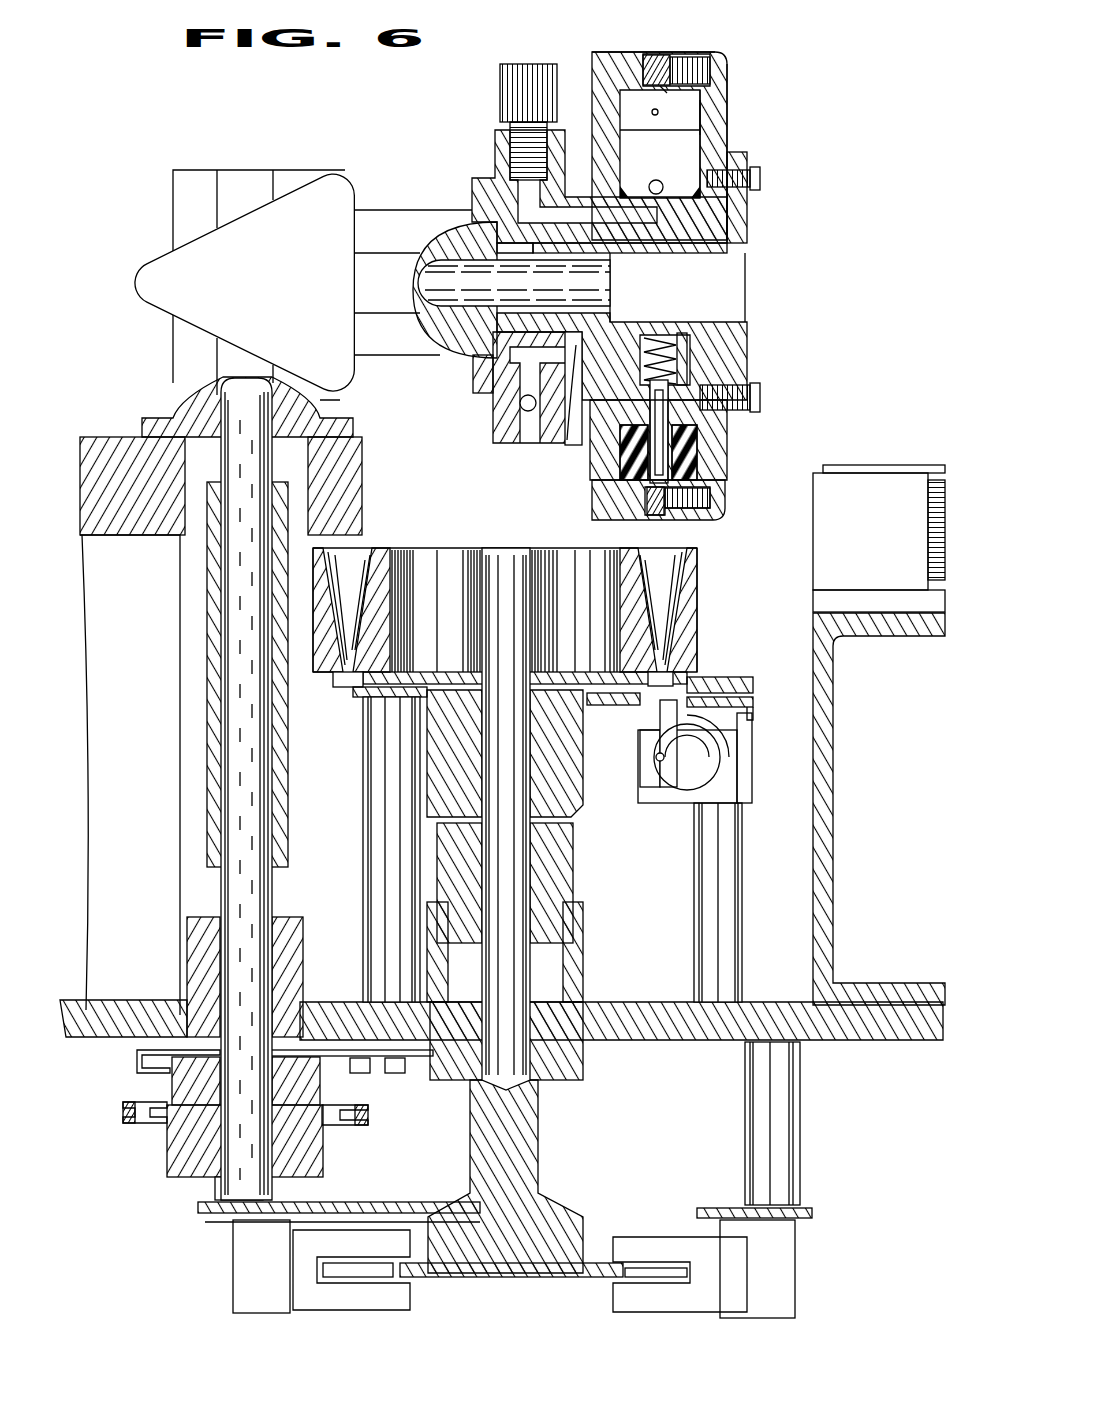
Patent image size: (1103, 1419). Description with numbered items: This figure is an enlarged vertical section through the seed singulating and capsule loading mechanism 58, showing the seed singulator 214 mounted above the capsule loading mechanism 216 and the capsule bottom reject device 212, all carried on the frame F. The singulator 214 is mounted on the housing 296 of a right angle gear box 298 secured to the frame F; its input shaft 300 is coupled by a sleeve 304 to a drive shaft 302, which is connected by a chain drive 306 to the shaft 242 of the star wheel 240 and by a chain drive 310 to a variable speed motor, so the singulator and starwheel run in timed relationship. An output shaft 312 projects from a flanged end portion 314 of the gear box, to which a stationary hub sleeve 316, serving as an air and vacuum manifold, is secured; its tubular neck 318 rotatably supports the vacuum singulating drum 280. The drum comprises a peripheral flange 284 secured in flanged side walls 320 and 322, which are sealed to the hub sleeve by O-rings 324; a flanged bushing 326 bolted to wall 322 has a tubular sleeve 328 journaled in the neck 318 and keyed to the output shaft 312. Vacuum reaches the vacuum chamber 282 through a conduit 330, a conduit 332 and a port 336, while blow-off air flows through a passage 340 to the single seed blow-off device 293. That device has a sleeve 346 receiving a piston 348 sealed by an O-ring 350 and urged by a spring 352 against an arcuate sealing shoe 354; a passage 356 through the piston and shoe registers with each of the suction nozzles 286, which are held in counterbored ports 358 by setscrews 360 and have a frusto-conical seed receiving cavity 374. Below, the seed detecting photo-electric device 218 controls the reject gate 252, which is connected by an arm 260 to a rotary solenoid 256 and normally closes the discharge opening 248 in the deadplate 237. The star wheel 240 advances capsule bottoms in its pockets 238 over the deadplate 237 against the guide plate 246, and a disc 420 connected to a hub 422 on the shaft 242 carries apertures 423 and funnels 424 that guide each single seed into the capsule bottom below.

The seed singulating and capsule loading mechanism 58 is at (813, 320).
The frame F is at (868, 1038).
The capsule bottom reject device 212 is at (640, 790).
The seed singulator 214 is at (734, 98).
The capsule loading mechanism 216 is at (700, 583).
The seed detecting photo-electric device 218 is at (876, 473).
The deadplate 237 is at (752, 710).
The pockets 238 is at (688, 673).
The star wheel 240 is at (360, 704).
The shaft 242 is at (530, 862).
The guide plate 246 is at (720, 680).
The discharge opening 248 is at (627, 705).
The reject gate 252 is at (650, 725).
The rotary solenoid 256 is at (713, 757).
The arm 260 is at (700, 713).
The vacuum singulating drum 280 is at (727, 118).
The vacuum chamber 282 is at (680, 140).
The peripheral flange 284 is at (598, 54).
The suction nozzles 286 is at (664, 64).
The single seed blow-off device 293 is at (700, 457).
The housing 296 is at (388, 208).
The right angle gear box 298 is at (173, 207).
The input shaft 300 is at (236, 408).
The drive shaft 302 is at (262, 892).
The sleeve 304 is at (213, 718).
The chain drive 306 is at (392, 1070).
The chain drive 310 is at (362, 1115).
The output shaft 312 is at (420, 285).
The flanged end portion 314 is at (478, 382).
The stationary hub sleeve 316 is at (495, 418).
The tubular neck 318 is at (722, 208).
The flanged side wall 320 is at (592, 62).
The flanged side wall 322 is at (727, 88).
The O-rings 324 is at (621, 192).
The flanged bushing 326 is at (747, 233).
The tubular sleeve 328 is at (727, 250).
The conduit 330 is at (500, 88).
The conduit 332 is at (520, 214).
The port 336 is at (641, 203).
The passage 340 is at (573, 357).
The sleeve 346 is at (678, 335).
The piston 348 is at (682, 414).
The O-ring 350 is at (675, 400).
The spring 352 is at (652, 340).
The arcuate sealing shoe 354 is at (620, 465).
The passage 356 is at (672, 427).
The counterbored port 358 is at (666, 89).
The setscrew 360 is at (700, 66).
The seed receiving cavity 374 is at (654, 58).
The disc 420 is at (352, 672).
The hub 422 is at (435, 765).
The apertures 423 is at (648, 678).
The funnels 424 is at (423, 552).